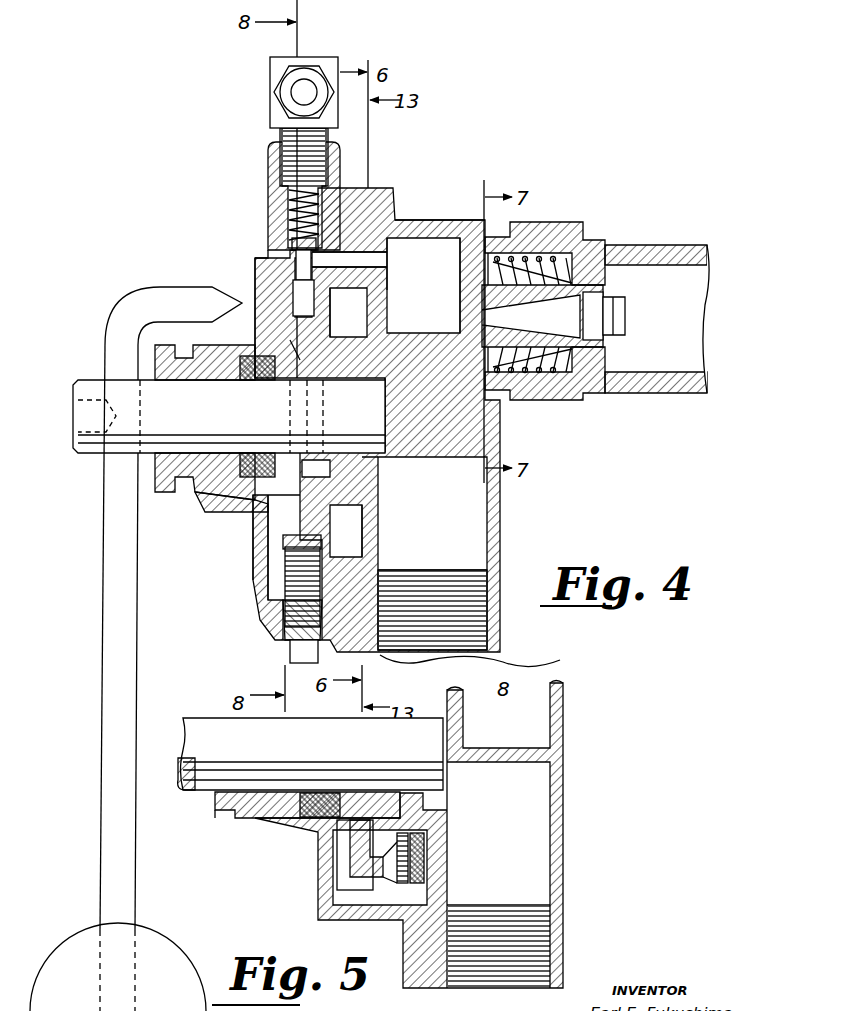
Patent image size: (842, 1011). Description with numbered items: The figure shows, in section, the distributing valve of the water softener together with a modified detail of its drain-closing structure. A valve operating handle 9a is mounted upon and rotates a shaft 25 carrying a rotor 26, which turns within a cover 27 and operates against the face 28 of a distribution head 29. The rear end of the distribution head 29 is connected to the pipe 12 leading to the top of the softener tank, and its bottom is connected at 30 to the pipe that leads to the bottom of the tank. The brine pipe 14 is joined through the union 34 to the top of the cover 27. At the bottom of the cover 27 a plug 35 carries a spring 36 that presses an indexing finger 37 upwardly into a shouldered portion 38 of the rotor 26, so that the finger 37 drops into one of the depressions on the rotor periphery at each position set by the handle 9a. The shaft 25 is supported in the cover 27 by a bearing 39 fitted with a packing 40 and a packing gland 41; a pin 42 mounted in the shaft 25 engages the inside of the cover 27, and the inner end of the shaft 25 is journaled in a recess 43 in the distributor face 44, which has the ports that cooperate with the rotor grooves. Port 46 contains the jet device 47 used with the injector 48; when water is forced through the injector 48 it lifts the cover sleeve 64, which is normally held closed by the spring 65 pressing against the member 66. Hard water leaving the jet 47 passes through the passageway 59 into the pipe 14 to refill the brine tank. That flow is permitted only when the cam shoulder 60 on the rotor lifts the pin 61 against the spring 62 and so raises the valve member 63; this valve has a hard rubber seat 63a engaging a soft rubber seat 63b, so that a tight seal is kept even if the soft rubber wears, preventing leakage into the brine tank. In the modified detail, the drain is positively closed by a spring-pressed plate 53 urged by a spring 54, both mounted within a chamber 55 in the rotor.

In FIG. 4, the valve operating handle 9a is at (107, 811).
In FIG. 4, the pipe 12 is at (643, 257).
In FIG. 4, the brine pipe 14 is at (312, 84).
In FIG. 4, the shaft 25 is at (75, 443).
In FIG. 5, the shaft 25 is at (188, 724).
In FIG. 4, the rotor 26 is at (298, 362).
In FIG. 4, the cover 27 is at (270, 258).
In FIG. 4, the face of distribution head 28 is at (358, 341).
In FIG. 4, the distribution head 29 is at (452, 220).
In FIG. 4, the connection to pipe 8 30 is at (450, 638).
In FIG. 4, the union 34 is at (270, 112).
In FIG. 4, the plug 35 is at (290, 650).
In FIG. 4, the spring 36 is at (277, 608).
In FIG. 4, the indexing finger 37 is at (256, 573).
In FIG. 4, the shouldered portion 38 is at (296, 541).
In FIG. 4, the bearing 39 is at (245, 499).
In FIG. 5, the bearing 39 is at (308, 835).
In FIG. 4, the packing 40 is at (258, 356).
In FIG. 5, the packing 40 is at (322, 798).
In FIG. 4, the packing gland 41 is at (150, 338).
In FIG. 5, the packing gland 41 is at (217, 818).
In FIG. 4, the hub sleeve 42 is at (296, 380).
In FIG. 4, the recess 43 is at (390, 403).
In FIG. 4, the distributor face 44 is at (372, 520).
In FIG. 4, the jet port 46 is at (399, 292).
In FIG. 4, the jet device 47 is at (395, 312).
In FIG. 4, the injector 48 is at (450, 292).
In FIG. 5, the spring-pressed plate 53 is at (430, 851).
In FIG. 5, the spring 54 is at (432, 871).
In FIG. 5, the chamber 55 is at (403, 920).
In FIG. 4, the passageway 59 is at (372, 205).
In FIG. 4, the cam shoulder 60 is at (302, 286).
In FIG. 4, the pin 61 is at (290, 298).
In FIG. 4, the spring 62 is at (286, 190).
In FIG. 4, the valve member 63 is at (292, 222).
In FIG. 4, the hard rubber seat 63a is at (345, 168).
In FIG. 4, the soft rubber seat 63b is at (346, 205).
In FIG. 4, the cover sleeve 64 is at (605, 302).
In FIG. 4, the spring 65 is at (583, 235).
In FIG. 4, the member 66 is at (493, 262).